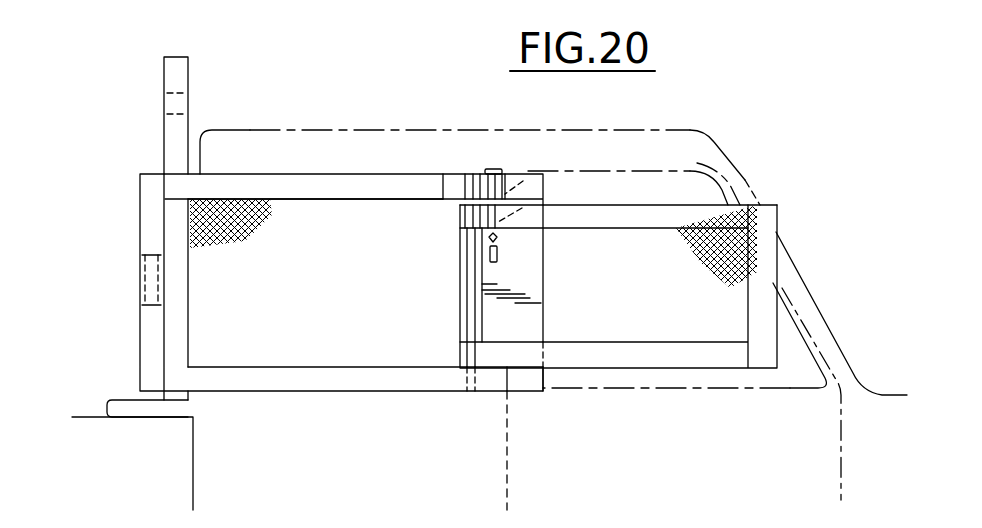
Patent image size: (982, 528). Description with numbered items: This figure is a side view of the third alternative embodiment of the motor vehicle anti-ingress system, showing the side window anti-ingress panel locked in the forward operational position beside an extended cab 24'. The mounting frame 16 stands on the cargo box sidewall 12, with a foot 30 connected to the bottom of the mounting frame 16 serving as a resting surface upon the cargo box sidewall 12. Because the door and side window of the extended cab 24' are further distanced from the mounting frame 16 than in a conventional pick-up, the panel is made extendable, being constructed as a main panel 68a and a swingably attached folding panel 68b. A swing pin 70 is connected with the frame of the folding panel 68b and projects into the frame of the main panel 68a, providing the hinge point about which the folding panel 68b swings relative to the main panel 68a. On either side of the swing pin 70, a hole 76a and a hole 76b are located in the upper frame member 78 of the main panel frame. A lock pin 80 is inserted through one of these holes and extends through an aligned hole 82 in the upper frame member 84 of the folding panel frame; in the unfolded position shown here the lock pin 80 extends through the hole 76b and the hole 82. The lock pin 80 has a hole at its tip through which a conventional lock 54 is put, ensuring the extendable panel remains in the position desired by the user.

The cargo box sidewall 12 is at (83, 417).
The mounting frame 16 is at (164, 137).
The extended cab 24' is at (553, 295).
The foot 30 is at (113, 400).
The lock 54 is at (502, 260).
The main panel 68a is at (308, 174).
The folding panel 68b is at (688, 206).
The swing pin 70 is at (460, 283).
The hole 76a is at (440, 189).
The hole 76b is at (539, 172).
The upper frame member 78 is at (351, 204).
The lock pin 80 is at (493, 170).
The hole 82 is at (547, 193).
The upper frame member 84 is at (641, 233).